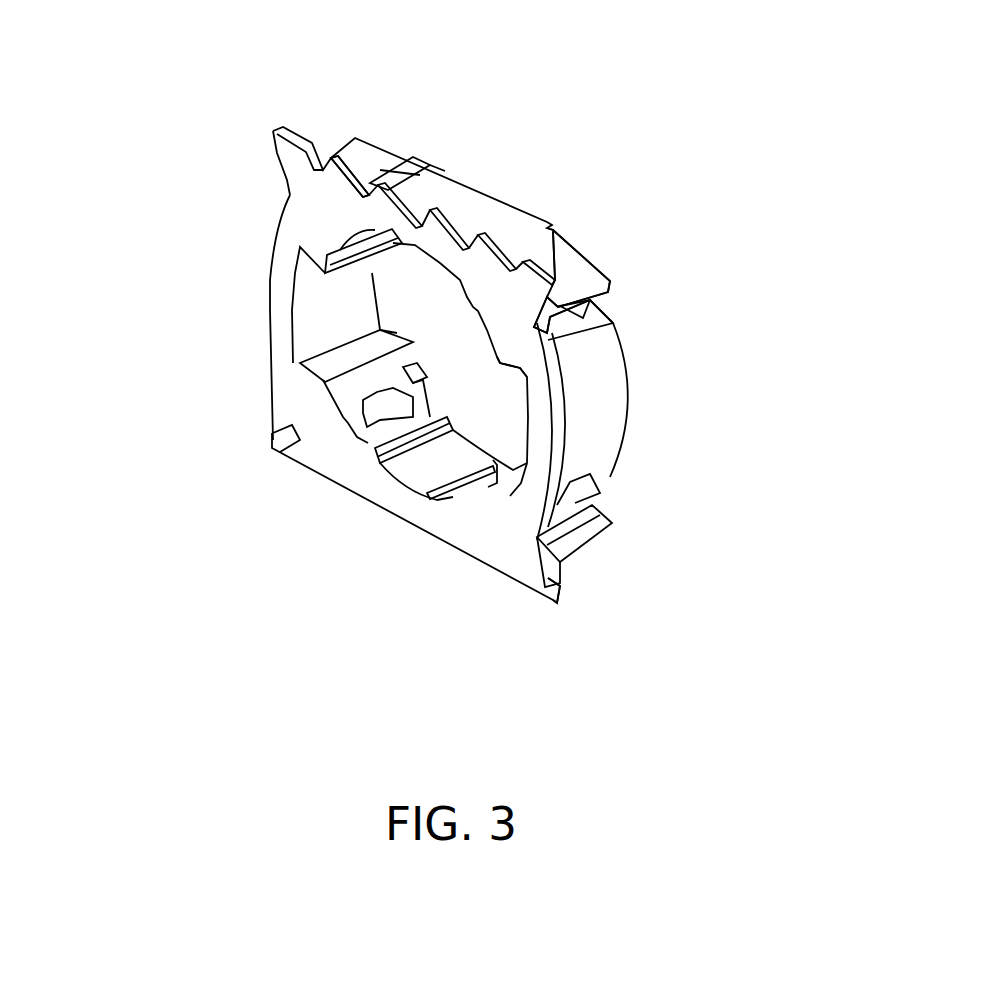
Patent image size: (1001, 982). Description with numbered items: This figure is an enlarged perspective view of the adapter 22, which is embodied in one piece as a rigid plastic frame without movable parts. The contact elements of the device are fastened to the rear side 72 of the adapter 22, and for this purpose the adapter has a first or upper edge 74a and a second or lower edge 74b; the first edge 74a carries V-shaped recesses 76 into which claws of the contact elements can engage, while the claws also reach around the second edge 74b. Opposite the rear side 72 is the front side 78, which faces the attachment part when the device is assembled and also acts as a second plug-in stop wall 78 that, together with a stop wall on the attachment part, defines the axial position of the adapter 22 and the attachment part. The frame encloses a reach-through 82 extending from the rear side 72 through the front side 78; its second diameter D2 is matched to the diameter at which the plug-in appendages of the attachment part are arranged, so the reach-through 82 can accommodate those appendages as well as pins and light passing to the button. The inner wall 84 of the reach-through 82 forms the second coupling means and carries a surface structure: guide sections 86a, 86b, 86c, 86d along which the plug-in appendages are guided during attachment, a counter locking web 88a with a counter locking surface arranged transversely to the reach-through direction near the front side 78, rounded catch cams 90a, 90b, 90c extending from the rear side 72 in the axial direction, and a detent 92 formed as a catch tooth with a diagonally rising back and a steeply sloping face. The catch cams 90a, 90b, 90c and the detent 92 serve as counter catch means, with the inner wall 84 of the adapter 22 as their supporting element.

The adapter 22 is at (255, 155).
The rear side 72 is at (286, 483).
The first or upper edge 74a is at (558, 265).
The second or lower edge 74b is at (483, 578).
The V-shaped recesses 76 is at (424, 203).
The front side 78 is at (582, 190).
The reach-through 82 is at (397, 307).
The inner wall 84 is at (440, 476).
The guide section 86a is at (340, 380).
The guide section 86b is at (467, 493).
The guide section 86c is at (505, 341).
The guide section 86d is at (362, 222).
The counter locking web 88a is at (407, 407).
The catch cam 90a is at (273, 450).
The catch cam 90b is at (490, 493).
The catch cam 90c is at (480, 303).
The detent 92 is at (328, 240).
The second diameter D2 is at (413, 258).